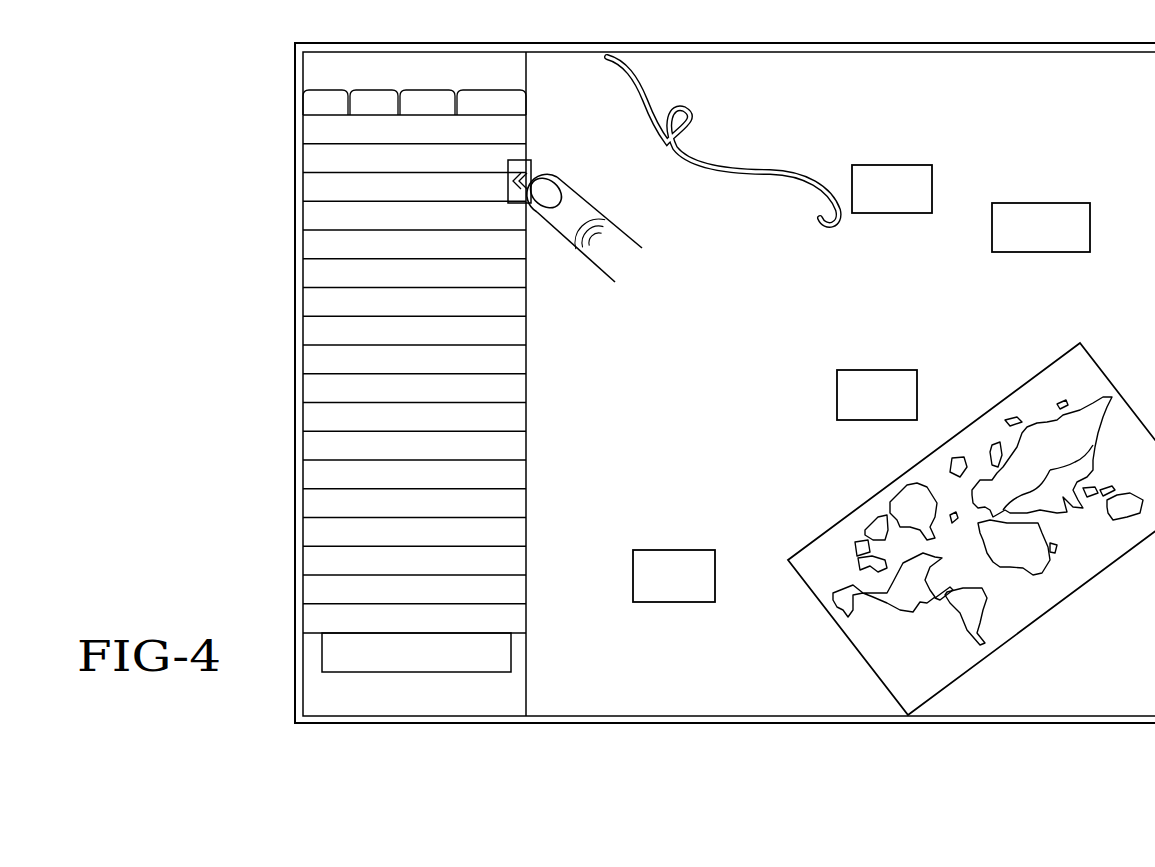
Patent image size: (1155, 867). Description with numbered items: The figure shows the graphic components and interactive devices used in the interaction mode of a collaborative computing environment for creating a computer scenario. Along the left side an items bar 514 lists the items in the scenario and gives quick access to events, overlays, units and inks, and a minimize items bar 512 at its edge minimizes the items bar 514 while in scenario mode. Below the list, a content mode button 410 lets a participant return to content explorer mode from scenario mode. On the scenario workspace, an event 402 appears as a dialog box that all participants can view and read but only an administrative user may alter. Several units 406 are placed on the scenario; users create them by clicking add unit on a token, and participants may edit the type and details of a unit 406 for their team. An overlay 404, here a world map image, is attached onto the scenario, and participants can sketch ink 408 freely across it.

The event 402 is at (1040, 253).
The overlay 404 is at (855, 513).
The unit 406 is at (890, 214).
The ink 408 is at (692, 124).
The content mode button 410 is at (443, 674).
The minimize items bar 512 is at (532, 163).
The items bar 514 is at (281, 89).